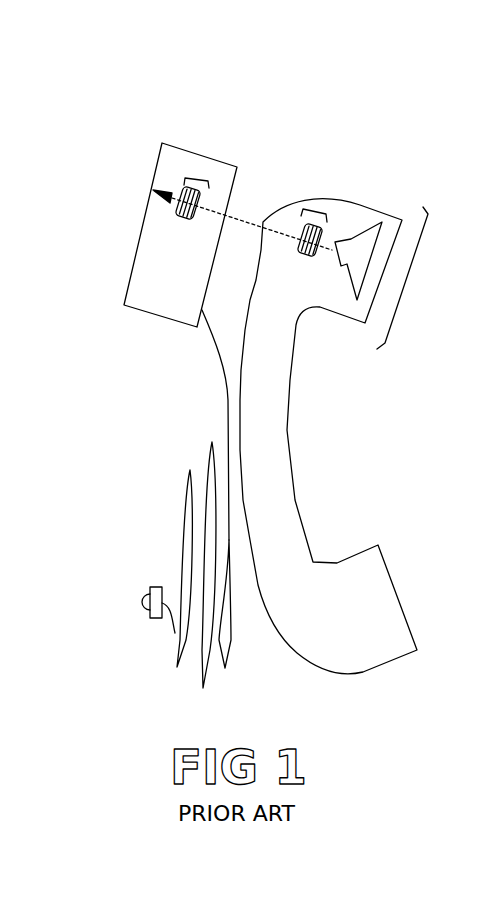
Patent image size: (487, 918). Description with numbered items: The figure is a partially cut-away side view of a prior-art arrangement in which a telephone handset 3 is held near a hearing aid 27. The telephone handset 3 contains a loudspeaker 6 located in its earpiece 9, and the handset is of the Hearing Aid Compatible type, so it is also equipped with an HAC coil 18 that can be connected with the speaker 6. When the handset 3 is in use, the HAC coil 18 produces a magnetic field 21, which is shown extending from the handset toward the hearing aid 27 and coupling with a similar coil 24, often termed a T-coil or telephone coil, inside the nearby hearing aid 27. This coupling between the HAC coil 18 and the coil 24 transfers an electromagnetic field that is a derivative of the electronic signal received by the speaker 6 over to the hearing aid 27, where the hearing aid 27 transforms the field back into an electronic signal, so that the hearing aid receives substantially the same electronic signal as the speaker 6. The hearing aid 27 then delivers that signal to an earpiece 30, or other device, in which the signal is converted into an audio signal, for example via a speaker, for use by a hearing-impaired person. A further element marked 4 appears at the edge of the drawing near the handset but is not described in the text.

The telephone handset 3 is at (287, 430).
The telephone 4 is at (482, 591).
The loudspeaker 6 is at (361, 237).
The earpiece 9 is at (407, 280).
The HAC coil 18 is at (318, 211).
The magnetic field 21 is at (252, 185).
The coil 24 is at (203, 179).
The hearing aid 27 is at (157, 303).
The earpiece 30 is at (158, 564).